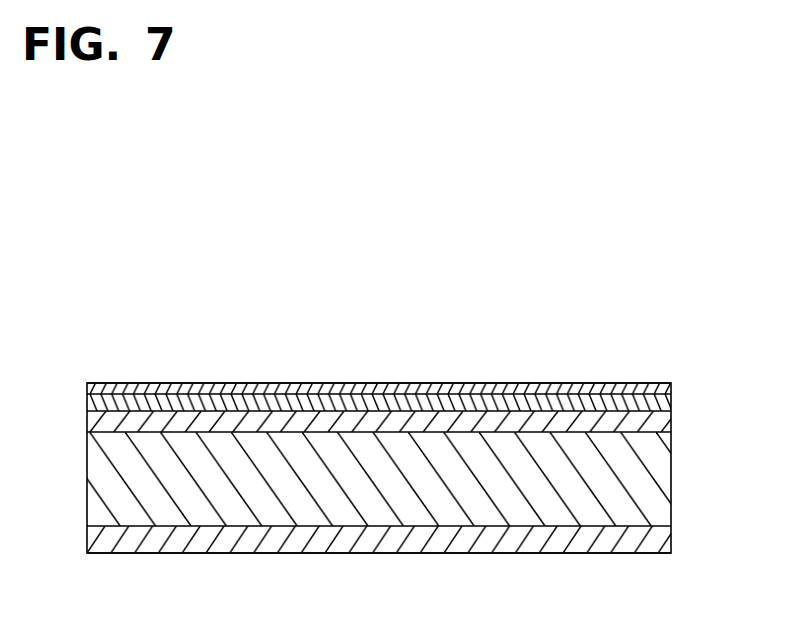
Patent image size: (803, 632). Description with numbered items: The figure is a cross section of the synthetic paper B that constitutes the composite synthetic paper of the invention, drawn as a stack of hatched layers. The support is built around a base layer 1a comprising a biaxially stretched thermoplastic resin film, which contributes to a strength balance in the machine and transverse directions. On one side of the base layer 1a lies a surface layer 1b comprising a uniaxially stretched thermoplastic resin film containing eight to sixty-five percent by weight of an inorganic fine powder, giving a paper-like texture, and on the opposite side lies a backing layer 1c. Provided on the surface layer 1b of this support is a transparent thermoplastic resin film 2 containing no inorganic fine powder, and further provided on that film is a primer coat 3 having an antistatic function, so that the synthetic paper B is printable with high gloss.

The synthetic paper B is at (404, 371).
The primer coat 3 is at (660, 385).
The transparent thermoplastic resin film 2 is at (673, 400).
The surface layer 1b is at (673, 425).
The base layer 1a is at (668, 485).
The backing layer 1c is at (673, 547).